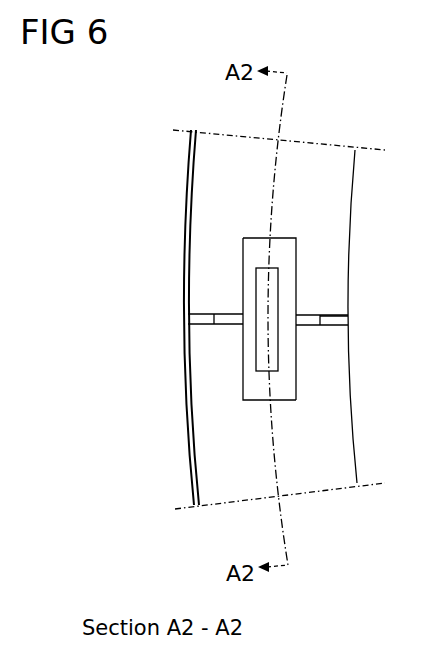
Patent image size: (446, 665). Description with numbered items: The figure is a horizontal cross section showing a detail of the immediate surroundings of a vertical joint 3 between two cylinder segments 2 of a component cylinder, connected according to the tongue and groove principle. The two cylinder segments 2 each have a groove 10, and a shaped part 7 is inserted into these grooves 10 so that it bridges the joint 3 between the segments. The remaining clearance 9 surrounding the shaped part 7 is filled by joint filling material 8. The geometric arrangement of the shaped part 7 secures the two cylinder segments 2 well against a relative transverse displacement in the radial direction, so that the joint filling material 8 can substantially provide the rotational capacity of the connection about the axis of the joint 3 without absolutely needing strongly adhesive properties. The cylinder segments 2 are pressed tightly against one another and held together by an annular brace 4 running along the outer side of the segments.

The cylinder segment 2 is at (238, 179).
The joint 3 is at (348, 320).
The annular brace 4 is at (186, 218).
The shaped part 7 is at (263, 342).
The joint filling material 8 is at (252, 387).
The clearance 9 is at (333, 313).
The groove 10 is at (289, 238).